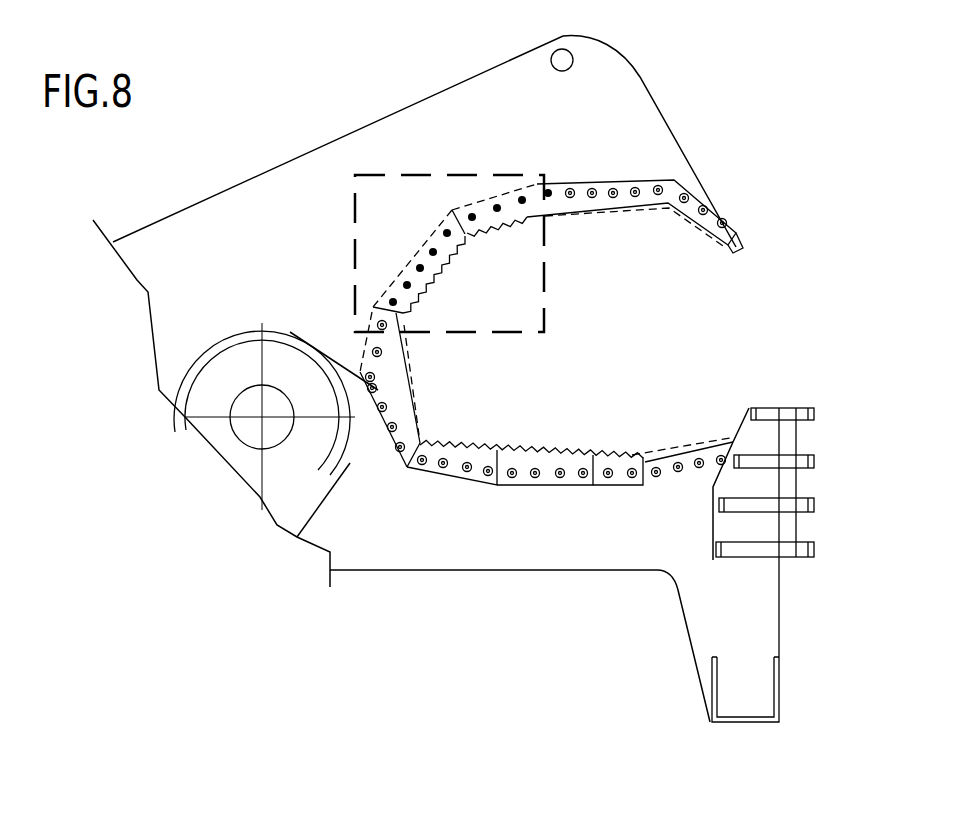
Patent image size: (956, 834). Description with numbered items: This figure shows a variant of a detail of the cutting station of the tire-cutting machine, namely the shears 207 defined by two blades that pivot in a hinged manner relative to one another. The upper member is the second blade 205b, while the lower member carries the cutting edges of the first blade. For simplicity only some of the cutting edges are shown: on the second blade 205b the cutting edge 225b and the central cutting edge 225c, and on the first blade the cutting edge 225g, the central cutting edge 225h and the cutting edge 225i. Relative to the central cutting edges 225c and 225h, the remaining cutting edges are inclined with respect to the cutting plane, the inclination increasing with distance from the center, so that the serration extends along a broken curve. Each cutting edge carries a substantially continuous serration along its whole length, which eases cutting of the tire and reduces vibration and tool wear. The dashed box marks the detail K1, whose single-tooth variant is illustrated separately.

The detail K1 is at (381, 175).
The cutting edge 225c is at (493, 235).
The cutting edge 225b is at (447, 287).
The second blade 205b is at (627, 228).
The shears 207 is at (731, 347).
The cutting edge 225g is at (450, 443).
The cutting edge 225h is at (540, 440).
The cutting edge 225i is at (618, 447).